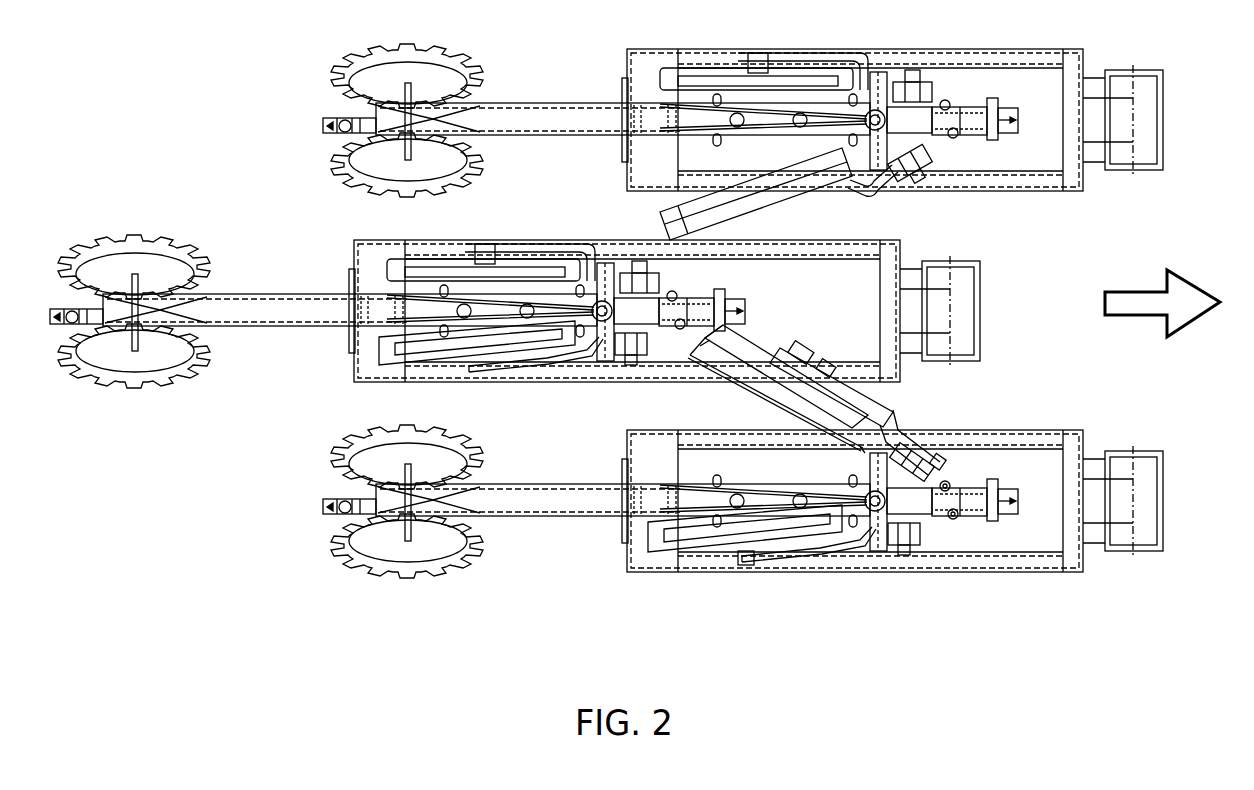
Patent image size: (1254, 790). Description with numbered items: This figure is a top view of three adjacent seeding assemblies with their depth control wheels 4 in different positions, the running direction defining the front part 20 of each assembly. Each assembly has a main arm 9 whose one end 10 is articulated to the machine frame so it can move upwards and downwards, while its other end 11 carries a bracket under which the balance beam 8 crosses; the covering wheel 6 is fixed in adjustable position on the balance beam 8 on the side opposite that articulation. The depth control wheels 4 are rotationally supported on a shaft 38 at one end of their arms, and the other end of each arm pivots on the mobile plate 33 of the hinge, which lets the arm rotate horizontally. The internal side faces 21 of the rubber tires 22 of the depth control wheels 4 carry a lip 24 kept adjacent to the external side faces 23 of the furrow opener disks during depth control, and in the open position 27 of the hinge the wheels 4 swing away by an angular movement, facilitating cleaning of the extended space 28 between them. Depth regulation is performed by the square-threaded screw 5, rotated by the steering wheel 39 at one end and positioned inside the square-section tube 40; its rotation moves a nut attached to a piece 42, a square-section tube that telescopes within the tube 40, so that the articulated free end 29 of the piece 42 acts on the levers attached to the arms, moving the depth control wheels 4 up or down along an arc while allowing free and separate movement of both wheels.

The depth control wheels 4 is at (741, 375).
The square-threaded screw 5 is at (1004, 502).
The covering wheel 6 is at (357, 559).
The balance beam 8 is at (600, 511).
The main arm 9 is at (832, 565).
The end of the main arm articulated to the machine frame 10 is at (1143, 528).
The other end of the main arm 11 is at (622, 528).
The front part/forward portion 20 is at (1217, 292).
The internal side faces 21 is at (730, 382).
The rubber tires 22 is at (775, 386).
The external side faces 23 is at (690, 476).
The lip 24 is at (696, 350).
The open position 27 is at (944, 480).
The extended space 28 is at (706, 458).
The free end / articulated end 29 is at (878, 552).
The mobile plate 33 is at (951, 471).
The shaft 38 is at (814, 345).
The steering wheel 39 is at (1015, 522).
The square-section tube 40 is at (977, 522).
The piece 42 is at (940, 520).